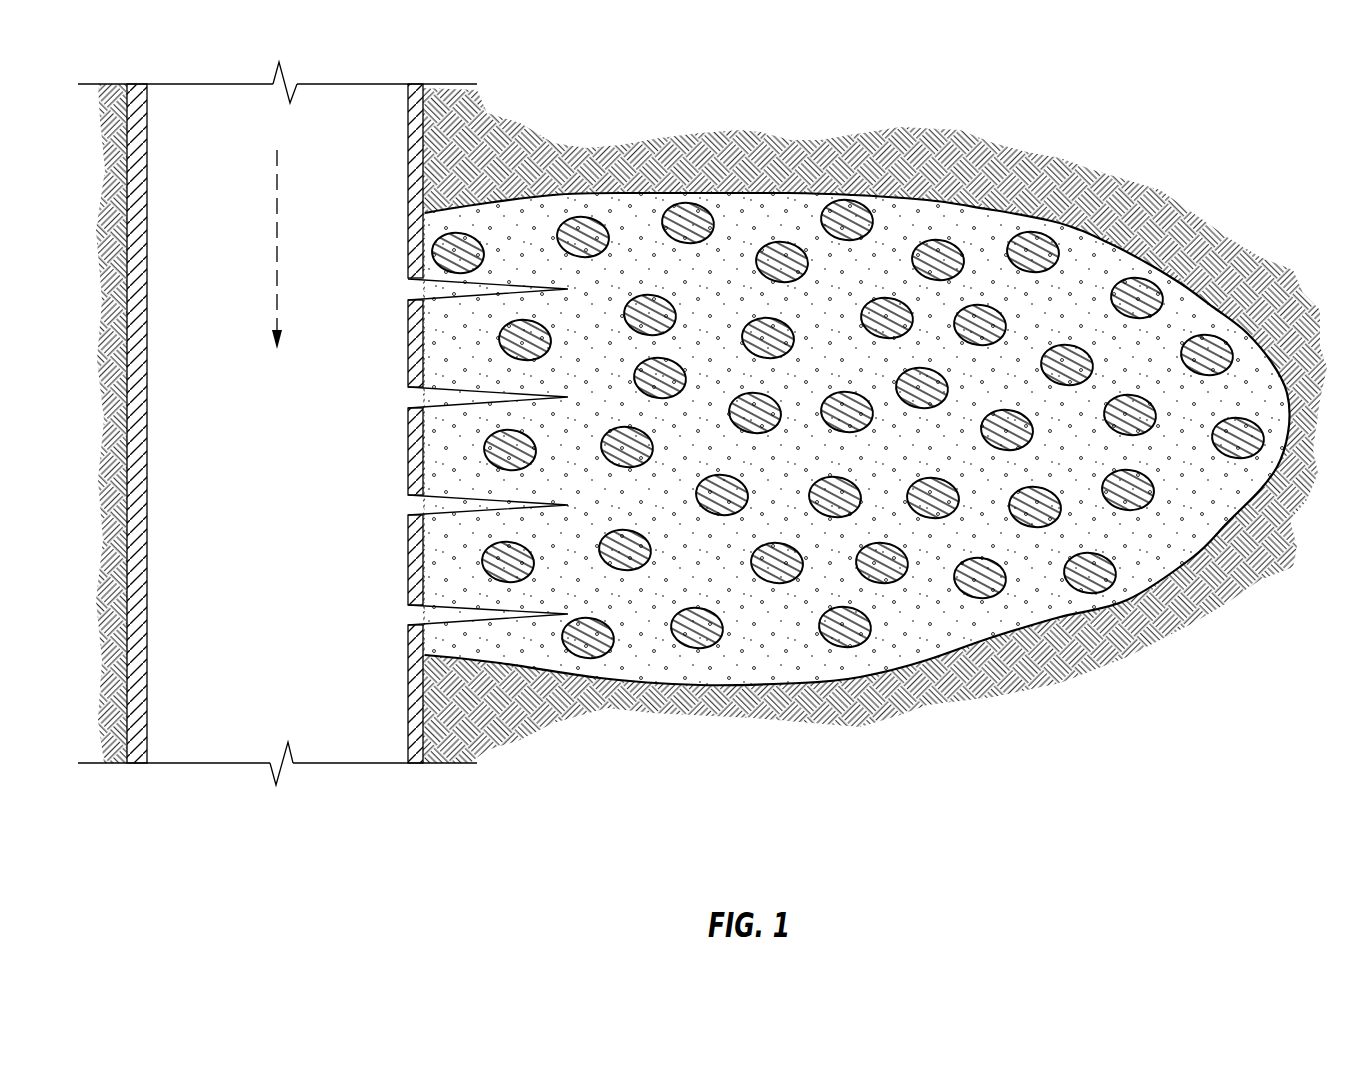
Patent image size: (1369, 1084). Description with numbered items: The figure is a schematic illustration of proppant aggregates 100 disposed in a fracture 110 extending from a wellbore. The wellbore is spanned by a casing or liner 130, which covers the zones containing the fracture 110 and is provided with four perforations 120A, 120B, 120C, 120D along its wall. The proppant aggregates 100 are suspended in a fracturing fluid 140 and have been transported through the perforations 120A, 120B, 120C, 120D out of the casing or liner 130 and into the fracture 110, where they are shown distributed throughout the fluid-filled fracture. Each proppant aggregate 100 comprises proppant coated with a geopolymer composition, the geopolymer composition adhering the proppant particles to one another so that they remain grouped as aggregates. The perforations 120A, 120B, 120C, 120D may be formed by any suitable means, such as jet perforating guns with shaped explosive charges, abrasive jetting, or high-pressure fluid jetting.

The proppant aggregates 100 is at (588, 652).
The fracture 110 is at (918, 197).
The perforation 120A is at (407, 291).
The perforation 120B is at (407, 399).
The perforation 120C is at (407, 507).
The perforation 120D is at (407, 616).
The casing or liner 130 is at (300, 436).
The fracturing fluid 140 is at (1057, 230).